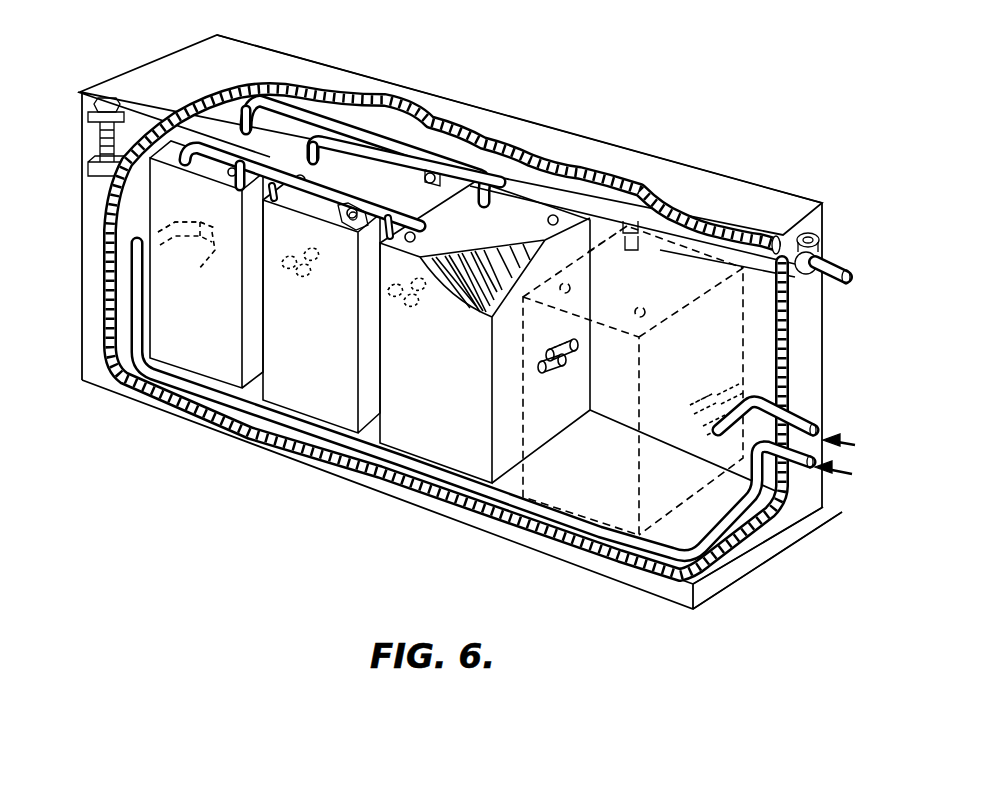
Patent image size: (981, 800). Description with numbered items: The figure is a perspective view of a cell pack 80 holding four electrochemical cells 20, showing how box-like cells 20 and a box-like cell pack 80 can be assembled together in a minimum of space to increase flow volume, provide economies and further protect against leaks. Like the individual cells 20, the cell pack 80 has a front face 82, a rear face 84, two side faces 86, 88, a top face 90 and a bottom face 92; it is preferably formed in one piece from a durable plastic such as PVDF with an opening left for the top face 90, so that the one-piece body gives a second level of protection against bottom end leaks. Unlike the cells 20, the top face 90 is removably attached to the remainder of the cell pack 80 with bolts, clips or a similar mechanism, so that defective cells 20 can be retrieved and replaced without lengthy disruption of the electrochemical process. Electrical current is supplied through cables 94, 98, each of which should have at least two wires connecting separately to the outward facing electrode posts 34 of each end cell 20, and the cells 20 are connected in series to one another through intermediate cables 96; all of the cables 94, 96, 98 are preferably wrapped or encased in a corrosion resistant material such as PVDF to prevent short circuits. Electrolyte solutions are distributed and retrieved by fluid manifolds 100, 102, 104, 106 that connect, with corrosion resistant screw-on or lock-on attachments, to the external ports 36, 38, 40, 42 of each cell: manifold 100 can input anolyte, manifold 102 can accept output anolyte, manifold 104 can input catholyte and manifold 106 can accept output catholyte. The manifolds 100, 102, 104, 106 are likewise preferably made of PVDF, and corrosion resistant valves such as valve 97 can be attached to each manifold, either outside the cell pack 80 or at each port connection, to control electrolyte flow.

The electrochemical cell 20 is at (215, 356).
The electrode post 34 is at (197, 270).
The port 36 is at (183, 162).
The port 38 is at (240, 123).
The port 40 is at (238, 182).
The port 42 is at (310, 147).
The cell pack 80 is at (628, 112).
The front face 82 is at (93, 193).
The rear face 84 is at (823, 340).
The side face 86 is at (790, 528).
The side face 88 is at (215, 37).
The top face 90 is at (680, 190).
The bottom face 92 is at (575, 572).
The cable 94 is at (139, 382).
The intermediate cable 96 is at (285, 298).
The valve 97 is at (824, 258).
The cable 98 is at (812, 418).
The fluid manifold 100 is at (318, 212).
The fluid manifold 102 is at (352, 230).
The fluid manifold 104 is at (333, 108).
The fluid manifold 106 is at (400, 160).